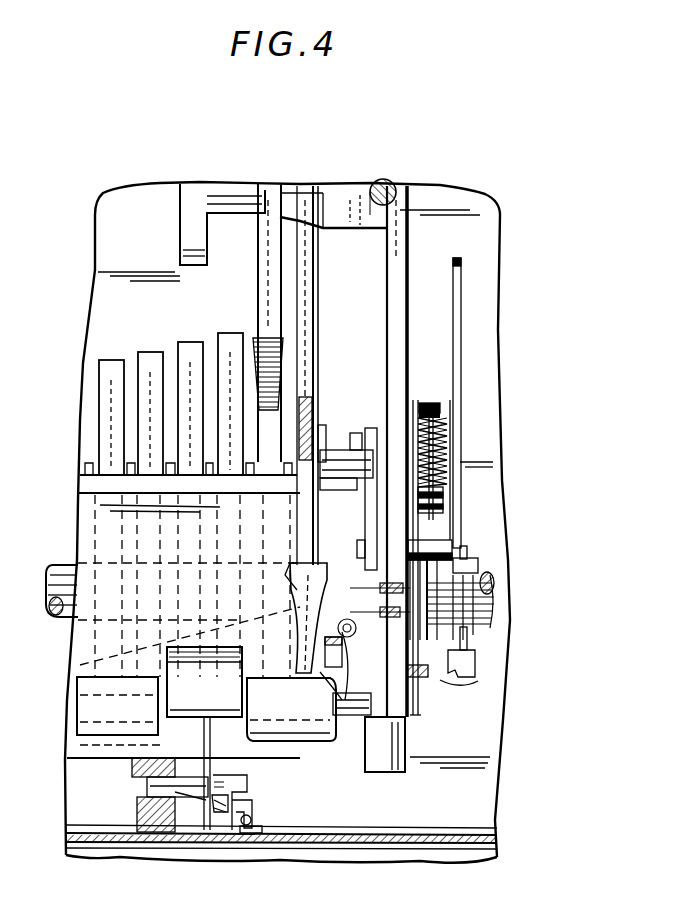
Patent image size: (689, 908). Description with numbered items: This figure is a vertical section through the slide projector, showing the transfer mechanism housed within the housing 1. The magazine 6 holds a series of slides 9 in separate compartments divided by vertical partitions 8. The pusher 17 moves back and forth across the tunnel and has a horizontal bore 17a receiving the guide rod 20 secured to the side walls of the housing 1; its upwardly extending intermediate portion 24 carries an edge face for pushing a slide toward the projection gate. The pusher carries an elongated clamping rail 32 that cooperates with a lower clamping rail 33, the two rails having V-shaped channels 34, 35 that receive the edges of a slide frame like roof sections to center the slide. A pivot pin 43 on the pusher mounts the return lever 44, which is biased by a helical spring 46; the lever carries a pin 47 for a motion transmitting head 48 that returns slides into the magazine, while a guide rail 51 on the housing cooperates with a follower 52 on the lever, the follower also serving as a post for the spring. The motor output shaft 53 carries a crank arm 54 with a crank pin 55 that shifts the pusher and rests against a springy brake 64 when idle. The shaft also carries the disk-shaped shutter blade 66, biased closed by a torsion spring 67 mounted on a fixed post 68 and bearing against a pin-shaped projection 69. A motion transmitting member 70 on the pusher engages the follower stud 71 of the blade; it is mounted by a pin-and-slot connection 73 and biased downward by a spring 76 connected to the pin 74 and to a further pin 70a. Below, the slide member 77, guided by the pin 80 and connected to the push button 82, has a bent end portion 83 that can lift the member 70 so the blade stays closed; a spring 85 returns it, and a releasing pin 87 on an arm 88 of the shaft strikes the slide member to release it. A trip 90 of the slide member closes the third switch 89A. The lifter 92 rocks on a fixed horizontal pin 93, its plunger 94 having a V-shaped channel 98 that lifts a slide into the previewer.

The housing 1 is at (470, 857).
The magazine 6 is at (80, 522).
The vertical partitions 8 is at (135, 463).
The slides 9 is at (258, 243).
The pusher 17 is at (406, 270).
The horizontal bore 17a is at (372, 185).
The guide rod 20 is at (396, 188).
The intermediate portion 24 is at (310, 272).
The clamping rail 32 is at (338, 207).
The lower clamping rail 33 is at (308, 618).
The V-shaped channel 34 is at (325, 228).
The V-shaped channel 35 is at (293, 562).
The pivot pin 43 is at (358, 666).
The return lever 44 is at (360, 548).
The helical spring 46 is at (385, 744).
The pin 47 is at (340, 453).
The motion transmitting head 48 is at (326, 430).
The guide rail 51 is at (352, 715).
The follower 52 is at (291, 709).
The output shaft 53 is at (62, 570).
The crank arm 54 is at (357, 488).
The crank pin 55 is at (378, 440).
The springy brake 64 is at (468, 643).
The shutter blade 66 is at (463, 268).
The torsion spring 67 is at (466, 548).
The fixed post 68 is at (476, 666).
The pin-shaped projection 69 is at (476, 568).
The motion transmitting member 70 is at (435, 410).
The pin 70a is at (430, 413).
The follower stud 71 is at (440, 543).
The pin-and-slot connection 73 is at (447, 434).
The pin 74 is at (445, 505).
The spring 76 is at (455, 460).
The slide member 77 is at (204, 744).
The pin 80 is at (132, 792).
The push button 82 is at (170, 692).
The end portion 83 is at (416, 712).
The spring 85 is at (222, 818).
The releasing pin 87 is at (425, 677).
The arm 88 is at (478, 681).
The third switch 89A is at (252, 836).
The trip 90 is at (250, 790).
The lifter 92 is at (258, 815).
The fixed horizontal pin 93 is at (231, 192).
The plunger 94 is at (318, 336).
The V-shaped channel 98 is at (262, 338).